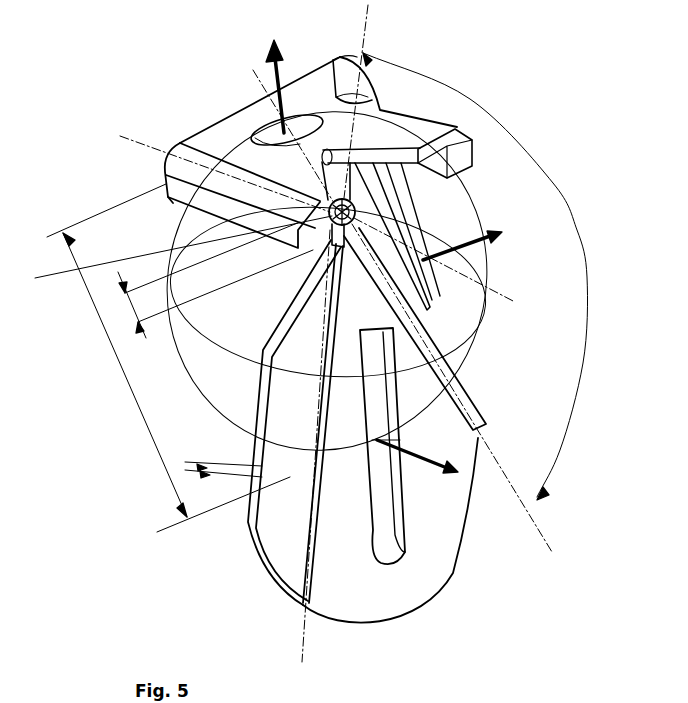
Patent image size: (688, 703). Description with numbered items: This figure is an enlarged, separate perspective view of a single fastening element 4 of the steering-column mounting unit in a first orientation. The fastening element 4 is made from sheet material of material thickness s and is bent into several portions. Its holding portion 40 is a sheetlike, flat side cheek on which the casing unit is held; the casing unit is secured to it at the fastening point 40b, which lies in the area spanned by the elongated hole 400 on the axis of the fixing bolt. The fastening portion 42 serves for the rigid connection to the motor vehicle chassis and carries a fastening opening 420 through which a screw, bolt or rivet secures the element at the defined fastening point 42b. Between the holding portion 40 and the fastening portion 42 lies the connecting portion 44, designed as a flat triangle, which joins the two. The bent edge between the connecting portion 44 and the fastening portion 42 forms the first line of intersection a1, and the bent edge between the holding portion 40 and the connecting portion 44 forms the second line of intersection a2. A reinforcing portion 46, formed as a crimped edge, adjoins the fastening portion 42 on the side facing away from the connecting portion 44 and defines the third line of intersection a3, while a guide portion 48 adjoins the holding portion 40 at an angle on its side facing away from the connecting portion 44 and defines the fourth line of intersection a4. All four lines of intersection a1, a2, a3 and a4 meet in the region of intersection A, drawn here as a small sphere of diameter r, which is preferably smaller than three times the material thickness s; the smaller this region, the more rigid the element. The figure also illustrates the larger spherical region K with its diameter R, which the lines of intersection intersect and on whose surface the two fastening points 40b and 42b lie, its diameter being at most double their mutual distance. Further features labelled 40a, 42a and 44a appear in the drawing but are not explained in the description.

The fastening element 4 is at (538, 76).
The holding portion 40 is at (373, 600).
The first flat surface of shank 40a is at (378, 440).
The fastening point 40b is at (384, 443).
The elongated hole 400 is at (412, 548).
The fastening portion 42 is at (318, 92).
The head top direction arrow 42a is at (273, 70).
The fastening point 42b is at (270, 123).
The fastening openings 420 is at (253, 140).
The connecting portion 44 is at (473, 355).
The arm direction arrow 44a is at (410, 248).
The reinforcing portion 46 is at (167, 198).
The guide portion 48 is at (295, 530).
The first line of intersection a1 is at (366, 50).
The second line of intersection a2 is at (520, 498).
The third line of intersection a3 is at (500, 290).
The fourth line of intersection a4 is at (297, 645).
The region of intersection A is at (175, 255).
The second spherical region K is at (180, 350).
The diameter of the spherical region K R is at (168, 358).
The diameter of the spherical region r is at (214, 280).
The material thickness s is at (256, 423).